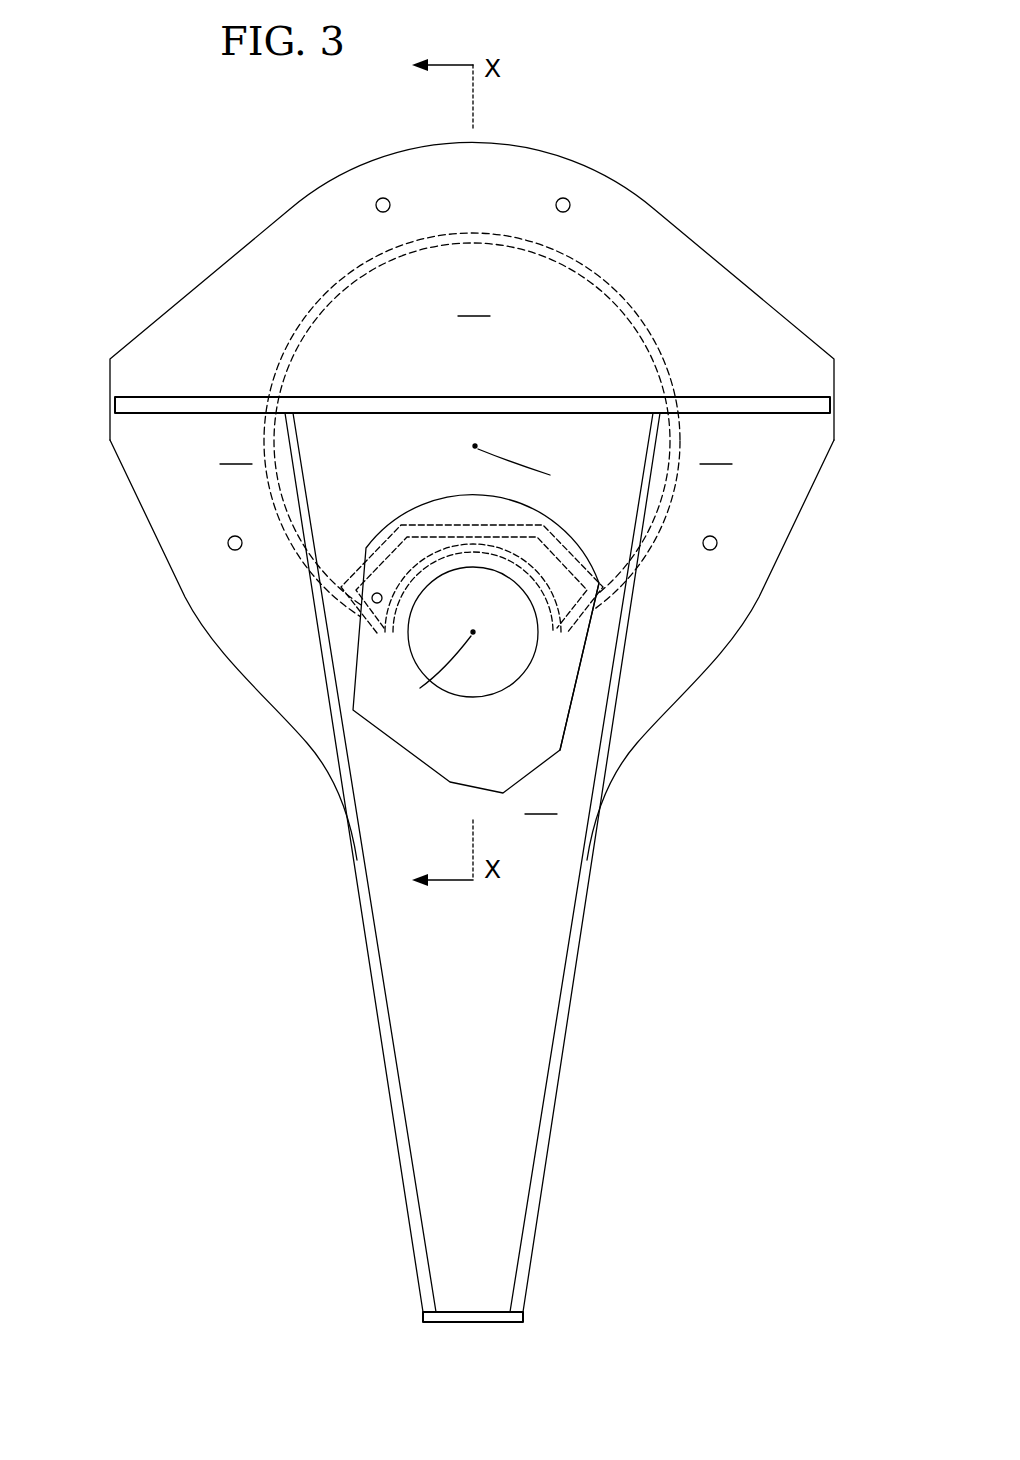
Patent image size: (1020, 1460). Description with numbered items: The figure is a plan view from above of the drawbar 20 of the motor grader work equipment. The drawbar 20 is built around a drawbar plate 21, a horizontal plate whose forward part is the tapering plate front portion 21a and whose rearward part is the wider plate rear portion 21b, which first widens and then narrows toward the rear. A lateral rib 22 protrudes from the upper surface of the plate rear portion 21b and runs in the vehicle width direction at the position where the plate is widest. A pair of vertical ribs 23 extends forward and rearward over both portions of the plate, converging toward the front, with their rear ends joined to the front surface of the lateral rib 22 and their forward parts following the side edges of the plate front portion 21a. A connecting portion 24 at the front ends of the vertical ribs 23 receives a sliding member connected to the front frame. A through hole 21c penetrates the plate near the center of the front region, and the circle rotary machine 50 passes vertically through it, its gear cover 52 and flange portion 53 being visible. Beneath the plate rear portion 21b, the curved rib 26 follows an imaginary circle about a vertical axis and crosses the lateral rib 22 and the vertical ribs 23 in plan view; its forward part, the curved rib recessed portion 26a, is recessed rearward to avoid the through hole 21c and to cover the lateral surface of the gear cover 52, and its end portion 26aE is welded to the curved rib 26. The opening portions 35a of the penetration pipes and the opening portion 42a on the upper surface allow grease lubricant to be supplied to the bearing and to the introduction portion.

The drawbar 20 is at (165, 170).
The drawbar plate 21 is at (166, 299).
The plate front portion 21a is at (495, 1063).
The plate rear portion 21b is at (153, 345).
The through hole 21c is at (512, 664).
The lateral rib 22 is at (505, 404).
The vertical rib 23 is at (333, 723).
The connecting portion 24 is at (460, 1322).
The curved rib 26 is at (530, 243).
The curved rib recessed portion 26a is at (600, 585).
The end portion 26aE is at (590, 615).
The opening portion 35a is at (378, 200).
The opening portion 42a is at (377, 592).
The circle rotary machine 50 is at (458, 712).
The gear cover 52 is at (392, 640).
The flange portion 53 is at (542, 722).